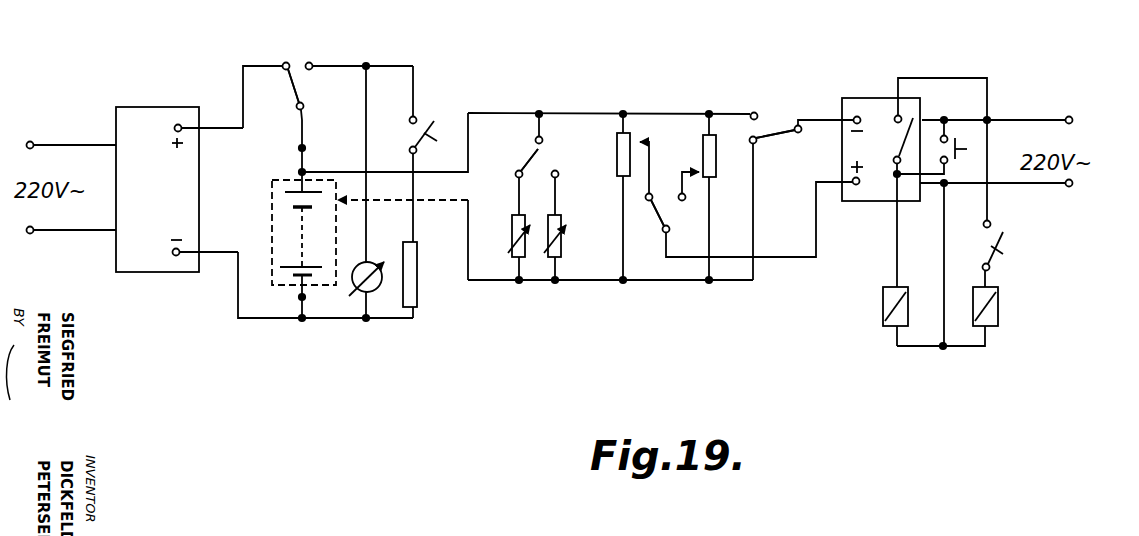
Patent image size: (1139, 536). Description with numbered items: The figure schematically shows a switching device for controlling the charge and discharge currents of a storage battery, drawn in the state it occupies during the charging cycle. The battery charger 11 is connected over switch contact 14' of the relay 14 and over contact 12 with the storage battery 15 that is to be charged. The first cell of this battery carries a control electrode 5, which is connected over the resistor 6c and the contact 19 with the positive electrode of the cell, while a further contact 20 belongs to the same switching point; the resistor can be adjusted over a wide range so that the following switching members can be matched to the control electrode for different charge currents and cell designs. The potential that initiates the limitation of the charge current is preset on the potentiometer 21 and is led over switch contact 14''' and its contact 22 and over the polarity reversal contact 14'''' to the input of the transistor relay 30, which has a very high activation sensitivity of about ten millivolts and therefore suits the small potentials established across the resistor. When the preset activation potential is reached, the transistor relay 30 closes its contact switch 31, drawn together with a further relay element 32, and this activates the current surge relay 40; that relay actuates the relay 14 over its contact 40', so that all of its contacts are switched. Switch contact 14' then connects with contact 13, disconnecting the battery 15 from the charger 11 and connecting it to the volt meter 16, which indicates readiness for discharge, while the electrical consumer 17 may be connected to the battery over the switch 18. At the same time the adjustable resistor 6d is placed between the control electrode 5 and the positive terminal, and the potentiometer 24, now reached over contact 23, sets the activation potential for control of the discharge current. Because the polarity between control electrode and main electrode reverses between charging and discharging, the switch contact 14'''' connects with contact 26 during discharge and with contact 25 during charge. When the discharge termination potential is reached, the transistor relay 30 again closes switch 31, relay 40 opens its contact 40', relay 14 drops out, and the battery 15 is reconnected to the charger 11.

The battery charger 11 is at (157, 189).
The contact 12 is at (281, 86).
The contact 13 is at (323, 82).
The switch contact 14' is at (298, 63).
The control electrode 5 is at (272, 201).
The storage battery 15 is at (298, 237).
The volt meter 16 is at (372, 195).
The electrical consumer 17 is at (418, 300).
The switch 18 is at (432, 120).
The contact 19 is at (516, 174).
The switch contact 20 is at (558, 172).
The resistor 6c is at (512, 230).
The resistor 6d is at (565, 243).
The potentiometer 21 is at (634, 134).
The switch contact 22 is at (648, 188).
The contact 23 is at (691, 203).
The switch contact 14''' is at (648, 234).
The potentiometer 24 is at (718, 162).
The contact 25 is at (768, 147).
The contact 26 is at (754, 112).
The switch contact 14'''' is at (792, 107).
The transistor relay 30 is at (873, 130).
The contact switch 31 is at (900, 153).
The relay contact 32 is at (945, 147).
The current surge relay 40 is at (873, 316).
The contact 40' is at (1014, 248).
The relay 14 is at (1007, 300).